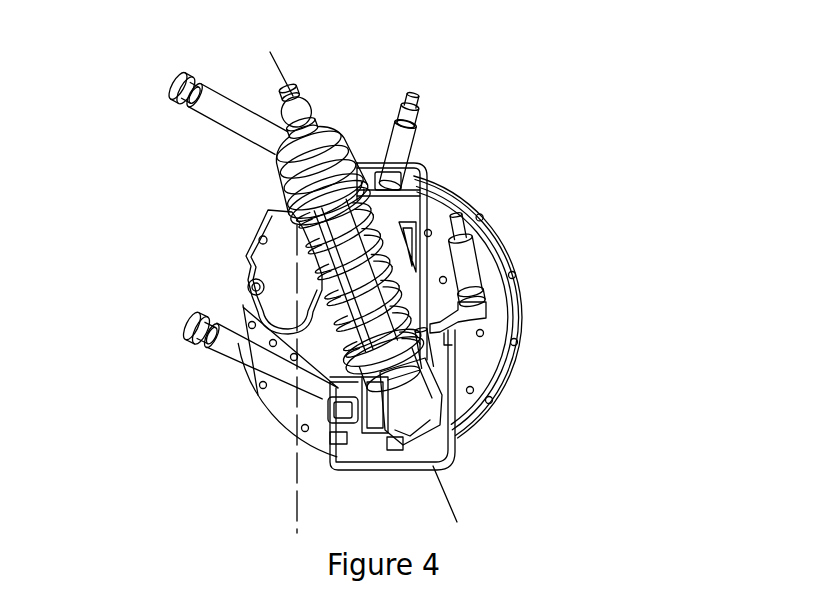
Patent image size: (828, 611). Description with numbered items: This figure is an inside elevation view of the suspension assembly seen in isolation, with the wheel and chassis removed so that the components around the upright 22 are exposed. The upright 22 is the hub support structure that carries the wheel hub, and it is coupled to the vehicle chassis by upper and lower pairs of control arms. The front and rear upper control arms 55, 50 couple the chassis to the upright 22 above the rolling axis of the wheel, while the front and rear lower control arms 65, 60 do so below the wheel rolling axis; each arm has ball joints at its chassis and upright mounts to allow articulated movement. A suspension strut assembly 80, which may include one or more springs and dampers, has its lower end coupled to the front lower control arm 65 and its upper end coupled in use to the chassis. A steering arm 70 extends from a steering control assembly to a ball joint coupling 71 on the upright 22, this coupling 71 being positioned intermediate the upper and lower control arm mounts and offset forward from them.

The upright 22 is at (243, 311).
The rear upper control arm 50 is at (220, 107).
The front upper control arm 55 is at (413, 145).
The rear lower control arm 60 is at (237, 352).
The front lower control arm 65 is at (437, 380).
The steering arm 70 is at (467, 265).
The ball joint coupling 71 is at (488, 289).
The suspension strut assembly 80 is at (325, 196).